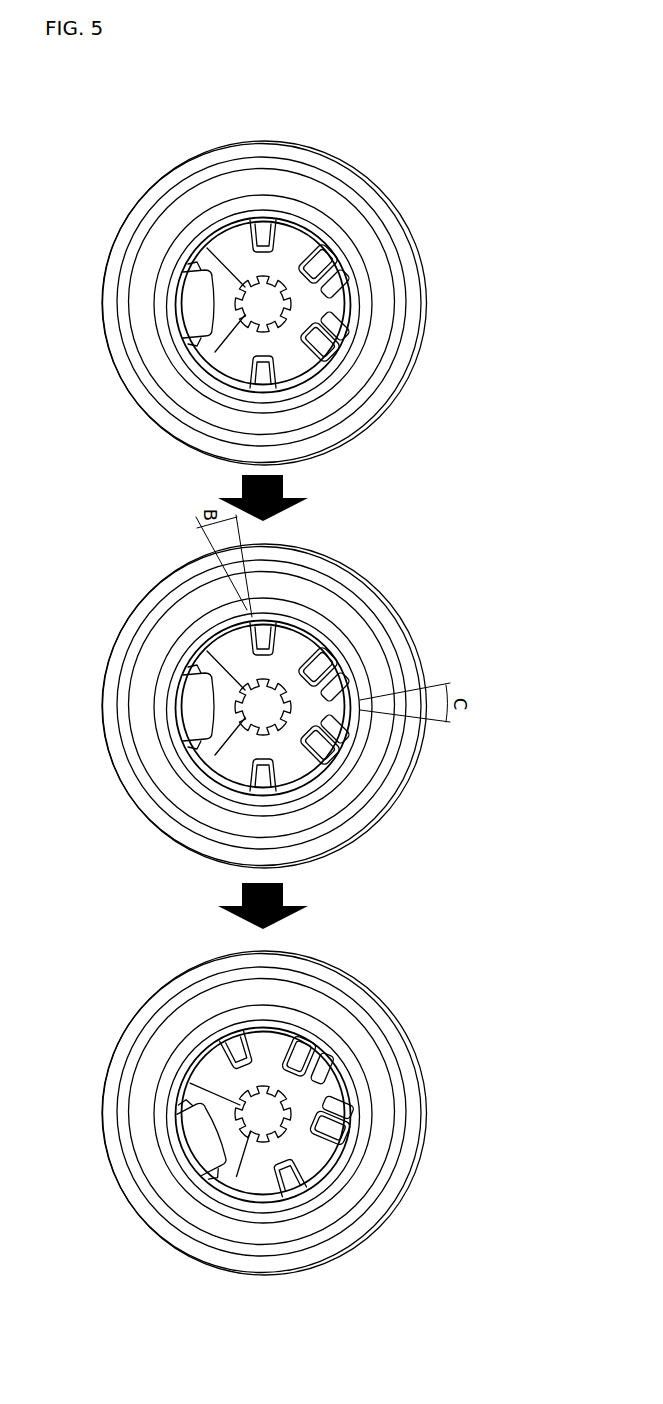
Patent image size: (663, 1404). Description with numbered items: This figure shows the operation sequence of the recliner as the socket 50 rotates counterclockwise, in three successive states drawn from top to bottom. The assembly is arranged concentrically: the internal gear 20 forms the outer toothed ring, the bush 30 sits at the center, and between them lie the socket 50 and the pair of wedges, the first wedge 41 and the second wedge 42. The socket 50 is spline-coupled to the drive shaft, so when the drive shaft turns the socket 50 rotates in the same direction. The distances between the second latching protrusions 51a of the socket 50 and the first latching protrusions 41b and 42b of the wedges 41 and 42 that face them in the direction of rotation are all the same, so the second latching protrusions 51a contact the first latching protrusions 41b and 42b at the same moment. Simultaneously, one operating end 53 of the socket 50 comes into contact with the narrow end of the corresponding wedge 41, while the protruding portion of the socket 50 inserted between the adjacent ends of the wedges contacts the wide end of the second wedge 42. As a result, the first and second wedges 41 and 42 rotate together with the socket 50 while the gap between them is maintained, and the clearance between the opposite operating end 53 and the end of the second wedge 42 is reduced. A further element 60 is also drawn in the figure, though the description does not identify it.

The internal gear 20 is at (264, 277).
The bush 30 is at (172, 304).
The first wedge 41 is at (380, 397).
The first latching protrusion 41b is at (273, 400).
The second wedge 42 is at (376, 225).
The first latching protrusion 42b is at (357, 193).
The socket 50 is at (288, 287).
The second latching protrusion 51a is at (230, 305).
The operating end 53 is at (150, 279).
The guide ring 60 is at (311, 304).